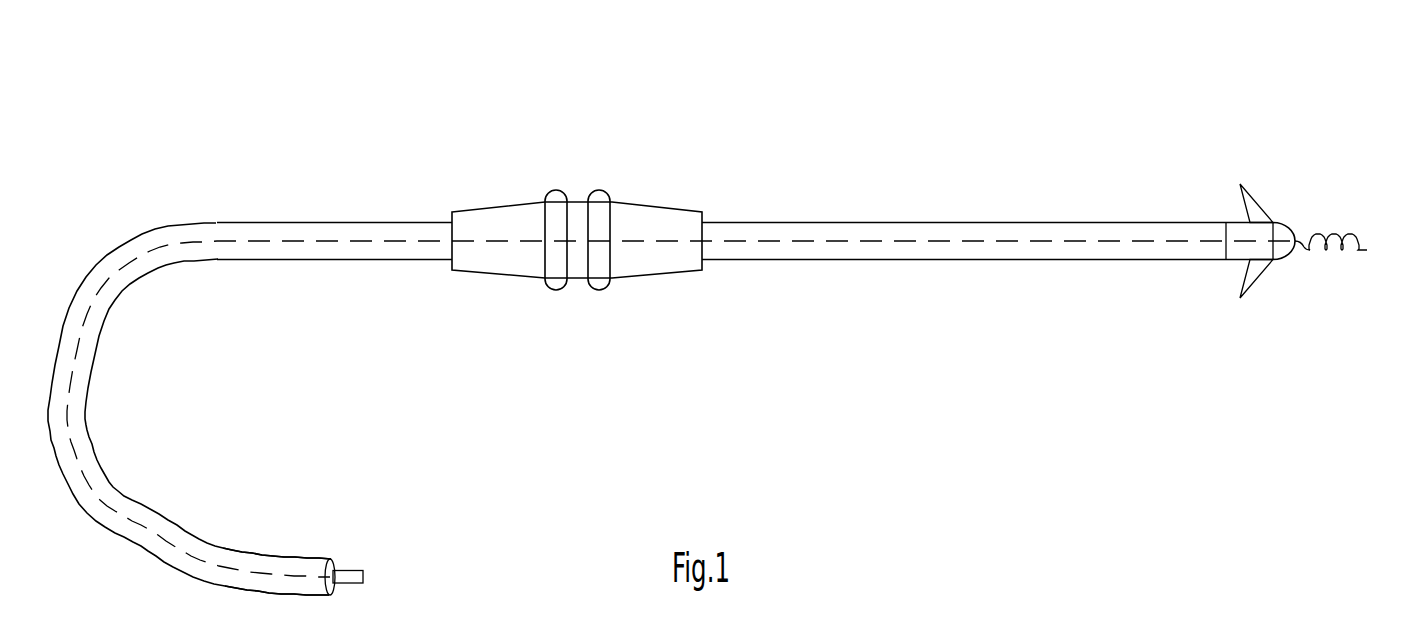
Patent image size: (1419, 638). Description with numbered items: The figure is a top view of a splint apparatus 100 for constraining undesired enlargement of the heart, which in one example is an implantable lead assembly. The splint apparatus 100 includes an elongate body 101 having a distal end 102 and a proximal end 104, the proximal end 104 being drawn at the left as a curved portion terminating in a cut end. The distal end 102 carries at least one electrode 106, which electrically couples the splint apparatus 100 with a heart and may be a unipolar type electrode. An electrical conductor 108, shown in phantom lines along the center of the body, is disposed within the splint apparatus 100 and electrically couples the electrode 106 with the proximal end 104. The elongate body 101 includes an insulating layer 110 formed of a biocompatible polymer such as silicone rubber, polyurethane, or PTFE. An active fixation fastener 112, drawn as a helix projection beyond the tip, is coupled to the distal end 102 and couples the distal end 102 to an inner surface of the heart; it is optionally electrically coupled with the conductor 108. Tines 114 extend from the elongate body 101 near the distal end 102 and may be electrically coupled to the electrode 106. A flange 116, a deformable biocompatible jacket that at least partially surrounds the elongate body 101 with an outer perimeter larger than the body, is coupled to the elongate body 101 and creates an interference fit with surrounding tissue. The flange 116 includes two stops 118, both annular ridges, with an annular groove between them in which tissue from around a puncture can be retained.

The splint apparatus 100 is at (1272, 33).
The elongate body 101 is at (957, 221).
The distal end 102 is at (1182, 210).
The proximal end 104 is at (305, 543).
The electrode 106 is at (1287, 253).
The electrical conductor 108 is at (233, 242).
The insulating layer 110 is at (198, 252).
The active fixation fastener 112 is at (1347, 233).
The tines 114 is at (1252, 208).
The flange 116 is at (657, 203).
The stop 118 is at (556, 190).